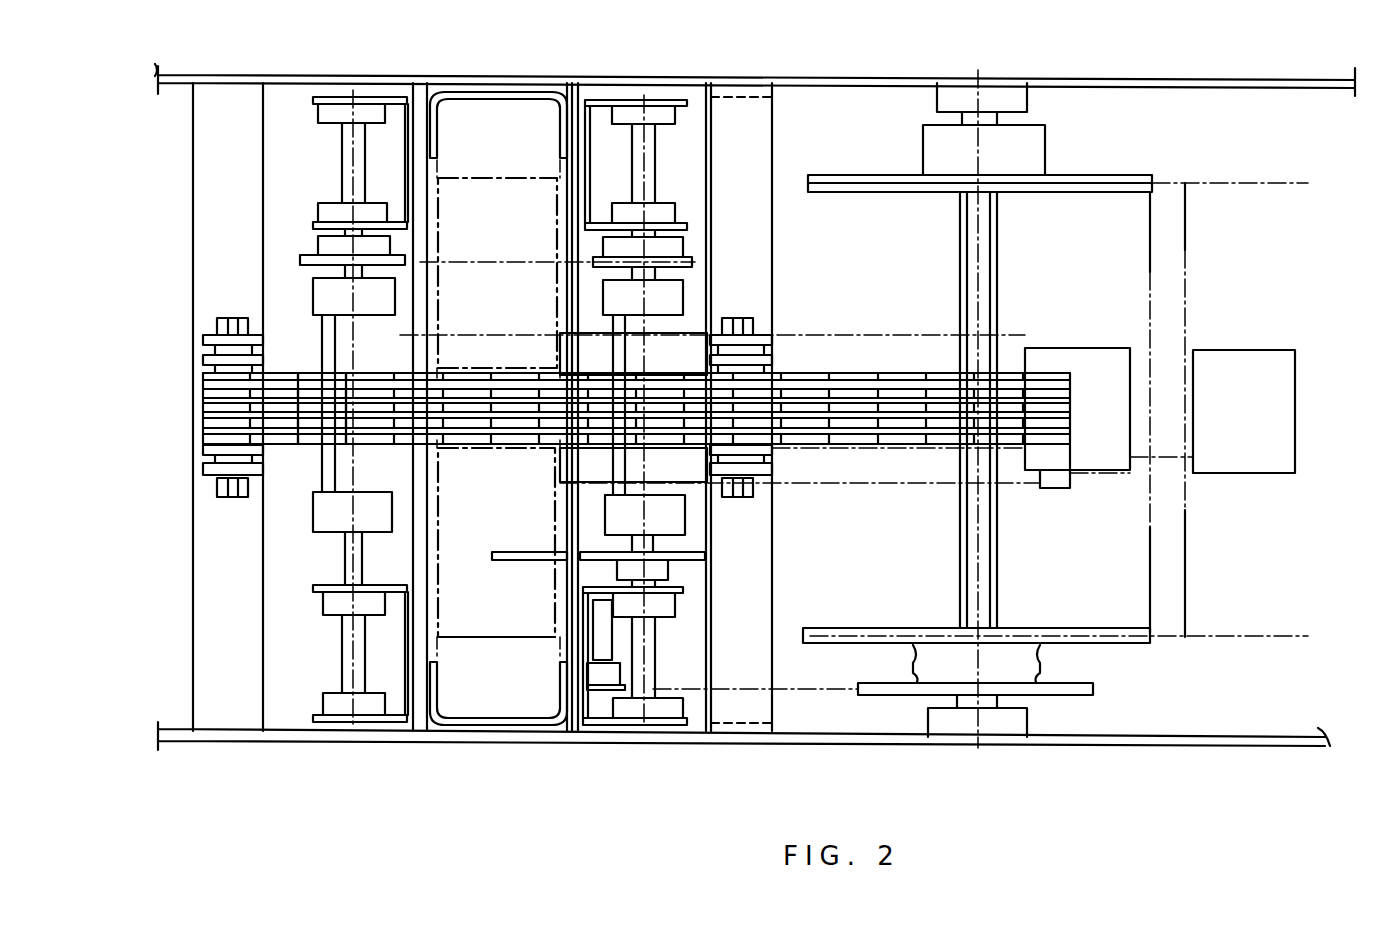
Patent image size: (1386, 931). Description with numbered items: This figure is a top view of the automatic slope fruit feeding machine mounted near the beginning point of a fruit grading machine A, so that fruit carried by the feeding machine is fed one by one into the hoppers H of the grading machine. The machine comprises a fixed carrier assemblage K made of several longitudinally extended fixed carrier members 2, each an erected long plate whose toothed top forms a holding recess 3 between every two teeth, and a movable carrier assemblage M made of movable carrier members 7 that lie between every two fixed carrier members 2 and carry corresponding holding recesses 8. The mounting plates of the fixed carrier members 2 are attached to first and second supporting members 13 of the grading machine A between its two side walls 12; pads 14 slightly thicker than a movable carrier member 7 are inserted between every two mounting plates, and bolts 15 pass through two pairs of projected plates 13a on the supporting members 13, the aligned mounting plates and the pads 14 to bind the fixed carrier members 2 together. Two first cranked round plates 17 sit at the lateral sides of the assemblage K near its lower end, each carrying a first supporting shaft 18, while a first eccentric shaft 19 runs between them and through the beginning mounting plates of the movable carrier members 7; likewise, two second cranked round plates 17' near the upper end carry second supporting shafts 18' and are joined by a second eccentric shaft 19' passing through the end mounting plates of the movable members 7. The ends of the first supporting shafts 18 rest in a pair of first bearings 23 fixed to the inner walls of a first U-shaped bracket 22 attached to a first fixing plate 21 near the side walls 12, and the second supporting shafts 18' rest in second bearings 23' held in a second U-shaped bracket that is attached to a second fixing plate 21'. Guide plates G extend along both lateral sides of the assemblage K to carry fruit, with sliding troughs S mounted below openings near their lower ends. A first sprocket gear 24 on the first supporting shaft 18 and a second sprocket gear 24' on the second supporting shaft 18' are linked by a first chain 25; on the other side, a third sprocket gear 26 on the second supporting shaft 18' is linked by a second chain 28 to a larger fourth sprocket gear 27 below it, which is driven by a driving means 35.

The side walls 12 is at (870, 78).
The supporting members 13 is at (204, 214).
The projected plates 13a is at (200, 342).
The bolts 15 is at (233, 315).
The fixed carrier members 2 is at (202, 377).
The pads 14 is at (203, 427).
The holding recess 3 is at (305, 378).
The holding recesses 8 is at (307, 440).
The first cranked round plates 17 is at (331, 430).
The second cranked round plates 17' is at (685, 409).
The first supporting shaft 18 is at (327, 408).
The second supporting shaft 18' is at (671, 411).
The first eccentric shaft 19 is at (357, 403).
The second eccentric shaft 19' is at (653, 405).
The first fixing plate 21 is at (497, 408).
The second fixing plate 21' is at (501, 410).
The first U-shaped bracket 22 is at (489, 449).
The first bearings 23 is at (331, 411).
The second bearings 23' is at (687, 418).
The first sprocket gear 24 is at (338, 239).
The second sprocket gear 24' is at (680, 248).
The first chain 25 is at (475, 262).
The third sprocket gear 26 is at (693, 563).
The fourth sprocket gear 27 is at (500, 550).
The second chain 28 is at (508, 562).
The driving means 35 is at (1030, 628).
The movable carrier members 7 is at (805, 397).
The fixed carrier assemblage K is at (862, 397).
The movable carrier assemblage M is at (860, 427).
The hoppers H is at (1100, 372).
The guide plates G is at (720, 372).
The sliding troughs S is at (497, 637).
The fruit grading machine A is at (1065, 72).